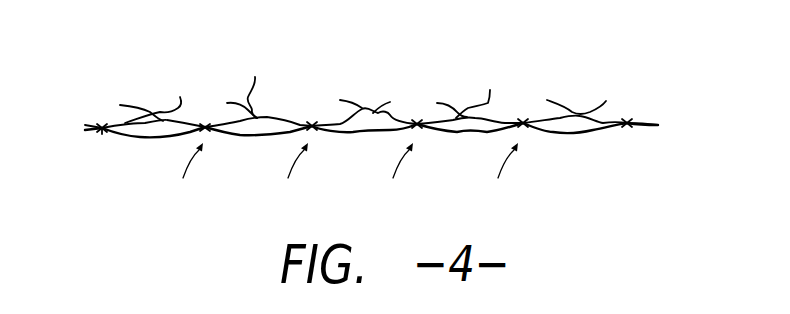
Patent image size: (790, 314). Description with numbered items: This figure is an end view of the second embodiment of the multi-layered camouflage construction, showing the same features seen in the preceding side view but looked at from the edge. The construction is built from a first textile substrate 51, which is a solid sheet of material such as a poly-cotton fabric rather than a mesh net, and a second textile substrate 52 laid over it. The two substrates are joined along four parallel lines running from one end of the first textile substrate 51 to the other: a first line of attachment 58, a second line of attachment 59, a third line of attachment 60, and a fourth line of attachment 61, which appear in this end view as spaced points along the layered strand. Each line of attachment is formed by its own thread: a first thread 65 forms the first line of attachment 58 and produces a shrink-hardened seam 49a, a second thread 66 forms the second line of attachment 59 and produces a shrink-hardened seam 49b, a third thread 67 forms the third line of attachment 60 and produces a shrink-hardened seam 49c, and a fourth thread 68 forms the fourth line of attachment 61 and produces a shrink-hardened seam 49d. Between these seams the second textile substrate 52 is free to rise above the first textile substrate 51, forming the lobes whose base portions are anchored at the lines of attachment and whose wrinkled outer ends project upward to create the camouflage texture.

The first textile substrate 51 is at (120, 137).
The second textile substrate 52 is at (118, 125).
The shrink-hardened seam 49a is at (205, 128).
The shrink-hardened seam 49b is at (312, 126).
The shrink-hardened seam 49c is at (417, 124).
The shrink-hardened seam 49d is at (523, 123).
The first line of attachment 58 is at (175, 174).
The second line of attachment 59 is at (281, 173).
The third line of attachment 60 is at (386, 173).
The fourth line of attachment 61 is at (493, 174).
The first thread 65 is at (205, 127).
The second thread 66 is at (312, 126).
The third thread 67 is at (417, 124).
The fourth thread 68 is at (523, 123).